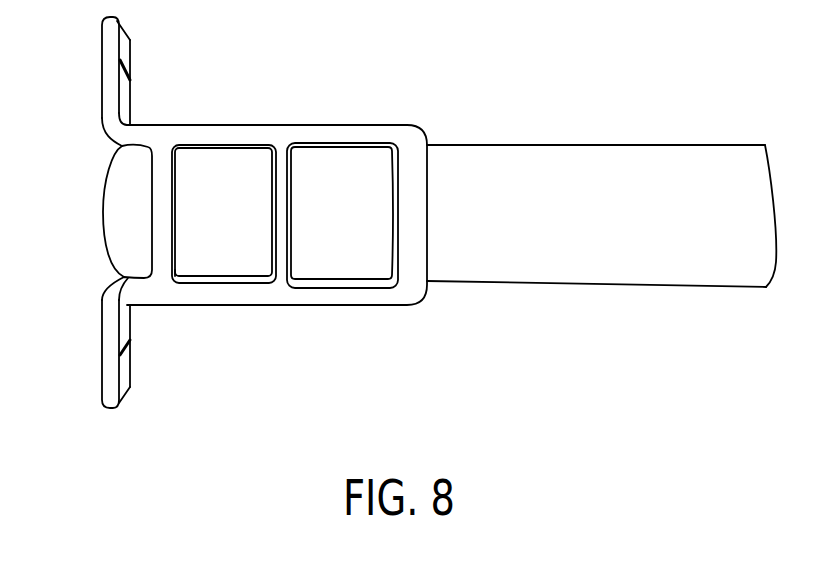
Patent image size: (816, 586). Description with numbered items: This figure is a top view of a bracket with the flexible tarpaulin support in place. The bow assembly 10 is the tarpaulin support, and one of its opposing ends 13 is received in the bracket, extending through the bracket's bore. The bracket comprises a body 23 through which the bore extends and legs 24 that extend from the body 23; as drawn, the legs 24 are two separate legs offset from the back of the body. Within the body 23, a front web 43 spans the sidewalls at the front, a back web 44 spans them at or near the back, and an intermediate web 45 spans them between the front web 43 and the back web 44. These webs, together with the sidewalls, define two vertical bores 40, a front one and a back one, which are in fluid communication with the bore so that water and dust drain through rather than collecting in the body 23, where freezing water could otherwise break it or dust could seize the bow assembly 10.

The bow assembly 10 is at (638, 167).
The end 13 is at (235, 262).
The body 23 is at (281, 132).
The leg 24 is at (110, 53).
The vertical bore 40 is at (197, 262).
The front web 43 is at (411, 147).
The back web 44 is at (163, 208).
The intermediate web 45 is at (287, 258).